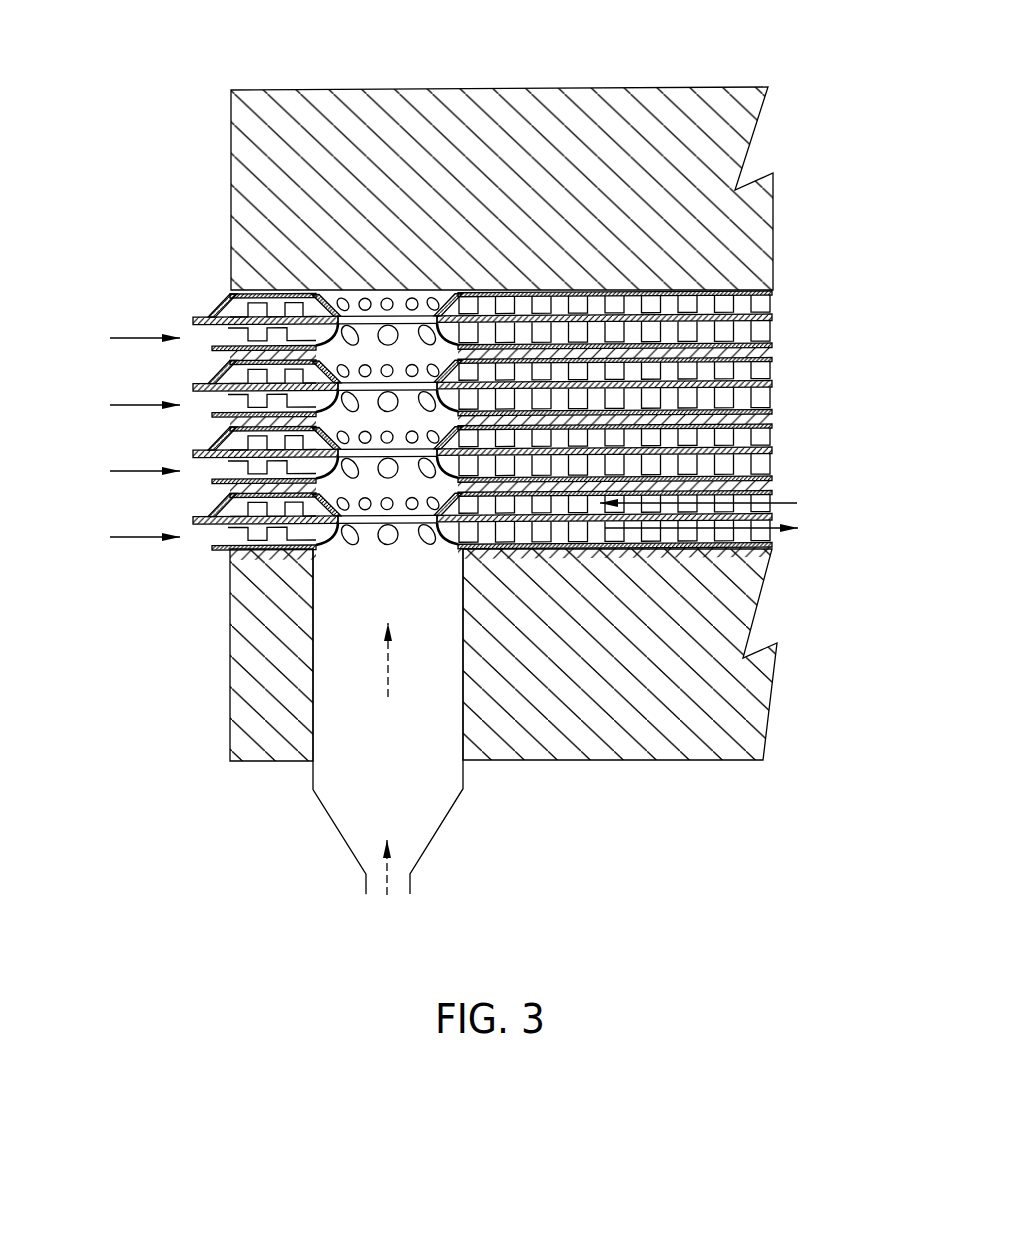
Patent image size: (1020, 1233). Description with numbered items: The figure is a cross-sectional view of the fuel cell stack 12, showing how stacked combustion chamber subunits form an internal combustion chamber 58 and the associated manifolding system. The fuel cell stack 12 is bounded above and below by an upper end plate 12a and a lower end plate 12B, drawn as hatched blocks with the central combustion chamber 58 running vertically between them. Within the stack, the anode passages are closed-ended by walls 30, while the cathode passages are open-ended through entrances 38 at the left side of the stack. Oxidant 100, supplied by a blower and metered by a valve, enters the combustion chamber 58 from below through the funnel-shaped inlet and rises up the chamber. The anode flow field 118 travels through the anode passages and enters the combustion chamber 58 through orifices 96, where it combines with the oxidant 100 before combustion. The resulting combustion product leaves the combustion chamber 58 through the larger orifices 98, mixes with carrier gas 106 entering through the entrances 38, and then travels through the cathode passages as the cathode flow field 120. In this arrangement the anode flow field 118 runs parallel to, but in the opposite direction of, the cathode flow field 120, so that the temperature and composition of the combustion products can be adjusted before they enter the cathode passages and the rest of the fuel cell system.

The fuel cell stack 12 is at (454, 489).
The upper end plate 12a is at (230, 187).
The lower end plate 12B is at (773, 672).
The wall 30 is at (202, 315).
The entrance 38 is at (202, 342).
The combustion chamber 58 is at (390, 317).
The orifice 96 is at (430, 537).
The larger orifice 98 is at (428, 507).
The oxidant 100 is at (387, 880).
The carrier gas 106 is at (123, 540).
The anode flow field 118 is at (792, 503).
The cathode flow field 120 is at (788, 535).